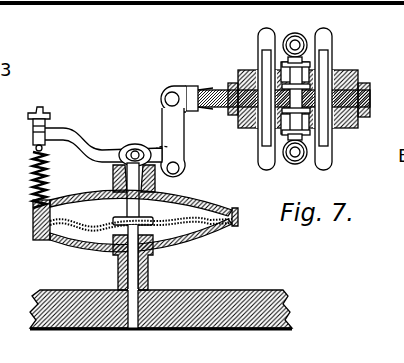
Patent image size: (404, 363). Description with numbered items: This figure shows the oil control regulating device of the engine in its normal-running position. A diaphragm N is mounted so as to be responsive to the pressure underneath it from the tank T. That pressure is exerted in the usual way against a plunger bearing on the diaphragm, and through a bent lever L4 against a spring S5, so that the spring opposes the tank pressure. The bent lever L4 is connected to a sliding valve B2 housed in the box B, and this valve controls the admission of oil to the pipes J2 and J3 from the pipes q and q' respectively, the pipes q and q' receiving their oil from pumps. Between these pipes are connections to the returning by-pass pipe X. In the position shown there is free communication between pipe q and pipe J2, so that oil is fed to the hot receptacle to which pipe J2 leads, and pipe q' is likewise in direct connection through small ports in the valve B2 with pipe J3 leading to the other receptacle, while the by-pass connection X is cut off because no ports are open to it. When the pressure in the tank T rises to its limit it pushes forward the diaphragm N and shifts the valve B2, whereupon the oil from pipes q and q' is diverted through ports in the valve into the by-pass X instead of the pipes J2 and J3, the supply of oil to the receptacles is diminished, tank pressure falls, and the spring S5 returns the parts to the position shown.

The box B is at (357, 73).
The sliding valve B2 is at (265, 88).
The pipe J2 is at (251, 94).
The pipe J3 is at (334, 89).
The by-pass pipe X is at (295, 97).
The pipe q is at (254, 116).
The pipe q' is at (337, 115).
The bent lever L4 is at (179, 142).
The spring S5 is at (53, 180).
The diaphragm N is at (108, 226).
The tank T is at (161, 325).